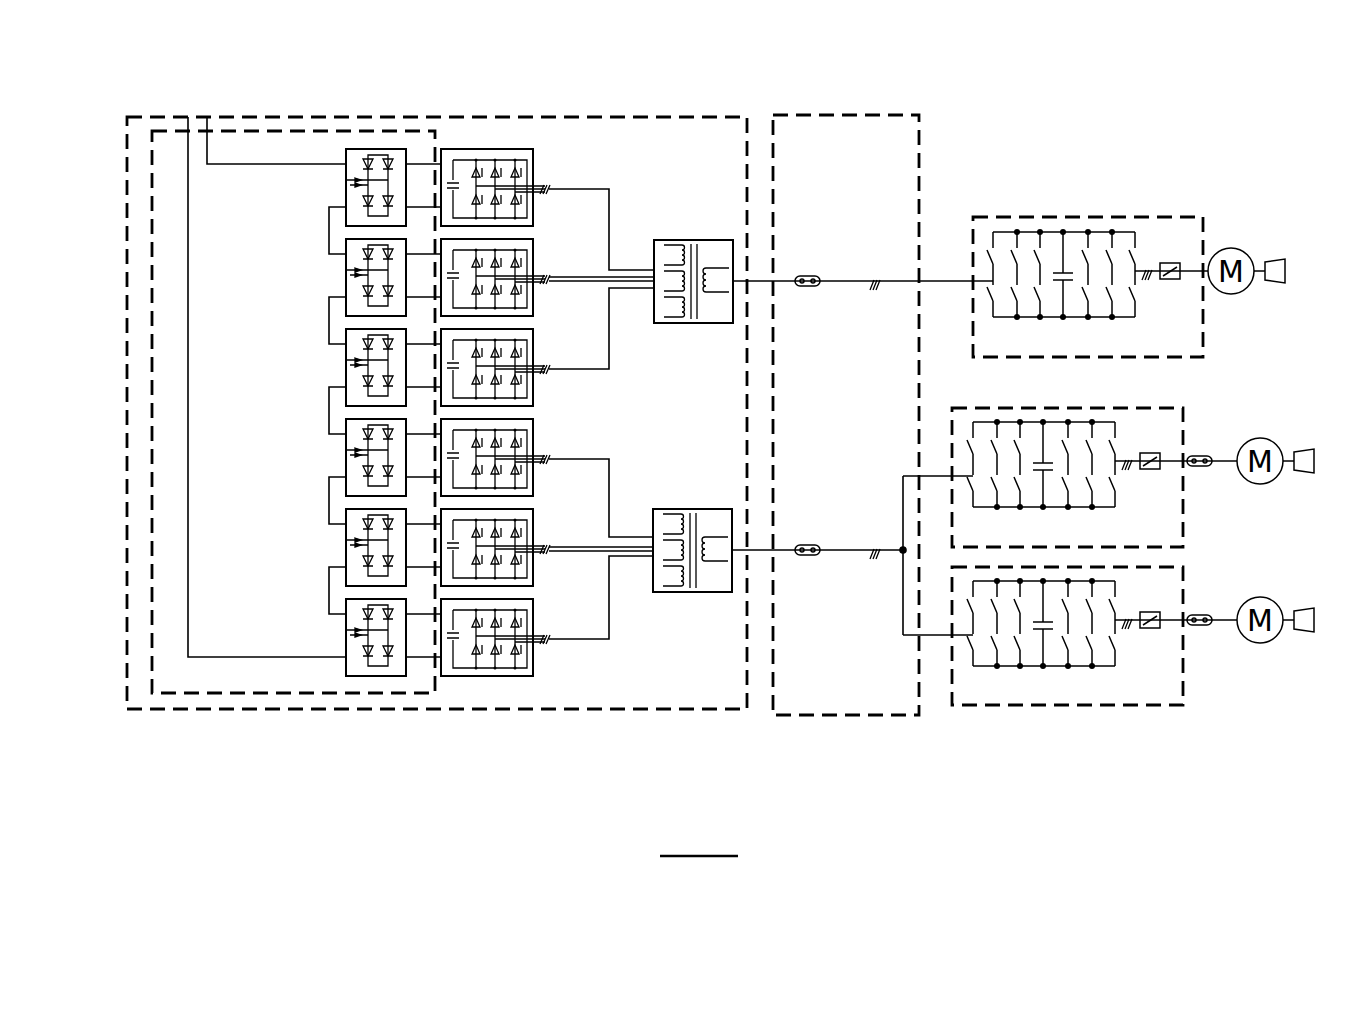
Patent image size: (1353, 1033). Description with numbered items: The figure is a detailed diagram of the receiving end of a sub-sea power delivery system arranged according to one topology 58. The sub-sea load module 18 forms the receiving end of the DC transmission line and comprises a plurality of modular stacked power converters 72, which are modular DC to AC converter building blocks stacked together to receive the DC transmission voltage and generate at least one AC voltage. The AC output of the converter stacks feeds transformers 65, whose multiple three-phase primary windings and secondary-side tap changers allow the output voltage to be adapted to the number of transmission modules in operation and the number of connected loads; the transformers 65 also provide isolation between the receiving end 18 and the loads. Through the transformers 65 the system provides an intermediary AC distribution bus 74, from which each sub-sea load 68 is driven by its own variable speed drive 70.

The topology 58 is at (692, 56).
The sub-sea load module 18 is at (517, 117).
The modular stacked power converter 72 is at (536, 167).
The transformer 65 is at (716, 323).
The AC distribution bus 74 is at (838, 115).
The variable speed drive 70 is at (1063, 217).
The sub-sea load 68 is at (1232, 248).